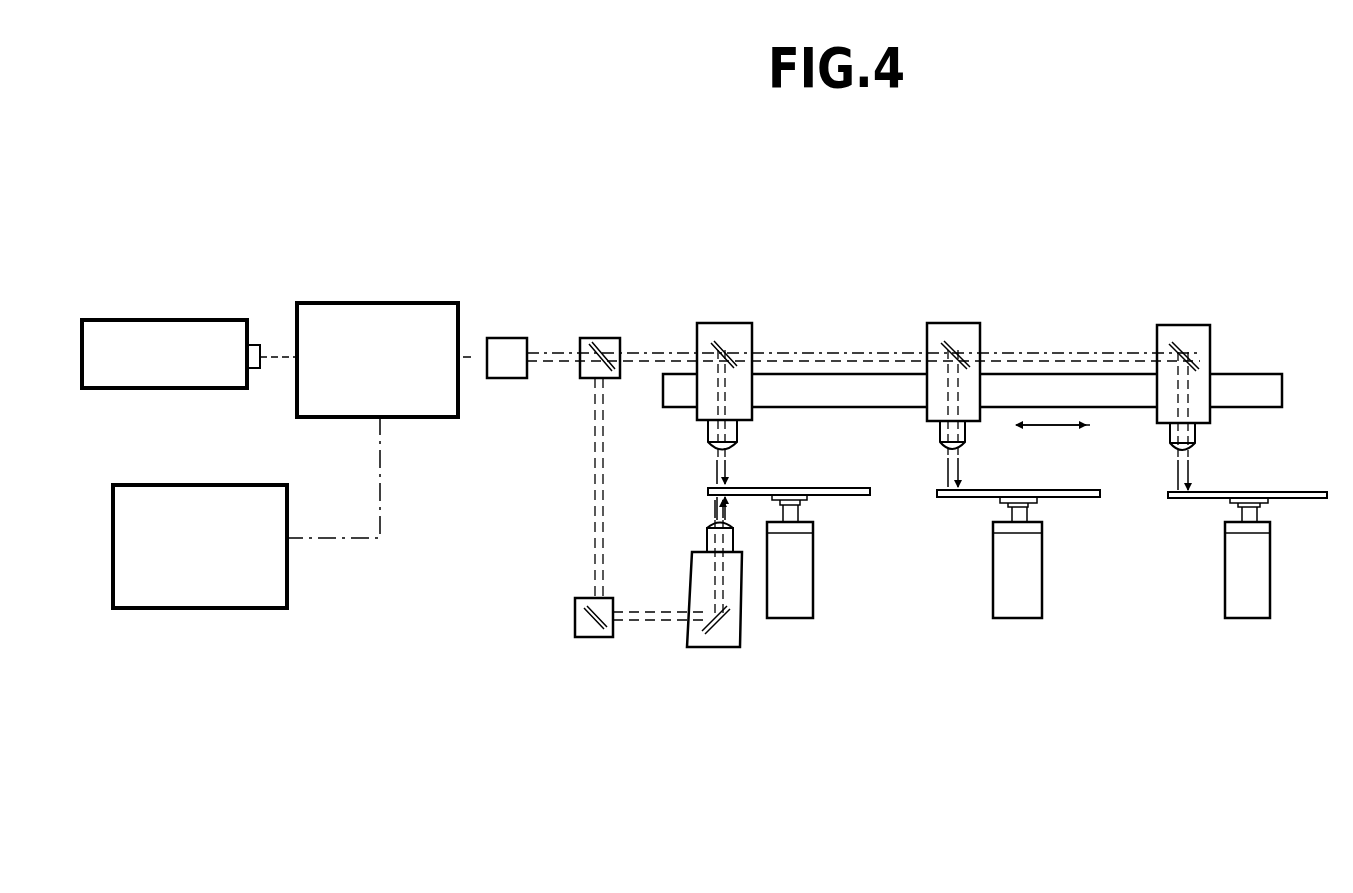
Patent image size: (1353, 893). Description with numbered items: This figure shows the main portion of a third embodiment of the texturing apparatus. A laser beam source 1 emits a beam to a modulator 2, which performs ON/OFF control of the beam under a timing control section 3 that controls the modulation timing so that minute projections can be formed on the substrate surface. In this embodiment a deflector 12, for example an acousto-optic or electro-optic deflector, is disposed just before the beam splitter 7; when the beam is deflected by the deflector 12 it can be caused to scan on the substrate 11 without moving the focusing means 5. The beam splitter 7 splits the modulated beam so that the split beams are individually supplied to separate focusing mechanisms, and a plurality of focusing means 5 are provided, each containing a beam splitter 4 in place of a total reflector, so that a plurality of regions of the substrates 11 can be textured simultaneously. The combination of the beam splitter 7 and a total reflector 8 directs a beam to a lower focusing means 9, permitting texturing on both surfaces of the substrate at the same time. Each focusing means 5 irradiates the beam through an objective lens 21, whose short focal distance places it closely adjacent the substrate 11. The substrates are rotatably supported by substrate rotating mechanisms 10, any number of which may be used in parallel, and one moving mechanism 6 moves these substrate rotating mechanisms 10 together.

The laser beam source 1 is at (169, 320).
The modulator 2 is at (364, 303).
The timing control section 3 is at (198, 486).
The beam splitter 4 is at (715, 341).
The focusing mechanism 5 is at (713, 323).
The moving mechanism 6 is at (1268, 376).
The beam splitter 7 is at (605, 338).
The total reflector 8 is at (574, 610).
The lower focusing means 9 is at (697, 567).
The substrate rotating mechanism 10 is at (805, 583).
The substrate 11 is at (843, 488).
The deflector 12 is at (512, 342).
The objective lens 21 is at (708, 443).